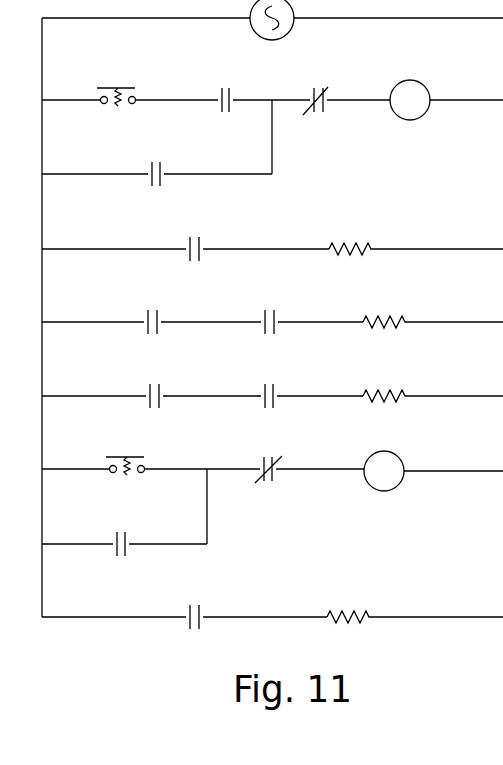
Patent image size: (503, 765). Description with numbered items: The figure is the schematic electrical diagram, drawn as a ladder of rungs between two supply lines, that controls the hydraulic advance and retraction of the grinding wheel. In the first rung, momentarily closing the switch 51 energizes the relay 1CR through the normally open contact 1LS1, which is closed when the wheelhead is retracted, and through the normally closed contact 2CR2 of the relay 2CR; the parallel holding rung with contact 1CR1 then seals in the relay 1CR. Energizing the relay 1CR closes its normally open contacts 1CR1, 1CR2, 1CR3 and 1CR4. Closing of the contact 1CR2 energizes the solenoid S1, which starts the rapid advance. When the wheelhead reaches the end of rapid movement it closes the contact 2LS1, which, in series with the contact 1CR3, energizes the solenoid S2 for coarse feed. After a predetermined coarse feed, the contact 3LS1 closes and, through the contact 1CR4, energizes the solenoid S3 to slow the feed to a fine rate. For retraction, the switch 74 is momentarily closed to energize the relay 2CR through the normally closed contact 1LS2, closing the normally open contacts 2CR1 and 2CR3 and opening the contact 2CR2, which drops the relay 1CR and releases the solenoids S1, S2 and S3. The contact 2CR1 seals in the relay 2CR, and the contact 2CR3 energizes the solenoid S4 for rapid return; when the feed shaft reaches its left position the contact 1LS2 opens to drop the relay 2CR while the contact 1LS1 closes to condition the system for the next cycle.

The switch 51 is at (118, 91).
The switch 74 is at (127, 460).
The normally open contact 1LS1 is at (204, 96).
The normally closed contact 2CR2 is at (326, 98).
The relay 1CR is at (446, 100).
The normally open contact 1CR1 is at (157, 170).
The normally open contact 1CR2 is at (185, 245).
The solenoid S1 is at (416, 243).
The normally open contact 2LS1 is at (126, 318).
The normally open contact 1CR3 is at (286, 318).
The solenoid S2 is at (433, 316).
The contact 3LS1 is at (126, 392).
The normally open contact 1CR4 is at (286, 392).
The solenoid S3 is at (433, 390).
The normally closed contact 1LS2 is at (254, 467).
The relay 2CR is at (433, 471).
The normally open contact 2CR1 is at (124, 540).
The normally open contact 2CR3 is at (184, 613).
The solenoid S4 is at (415, 611).